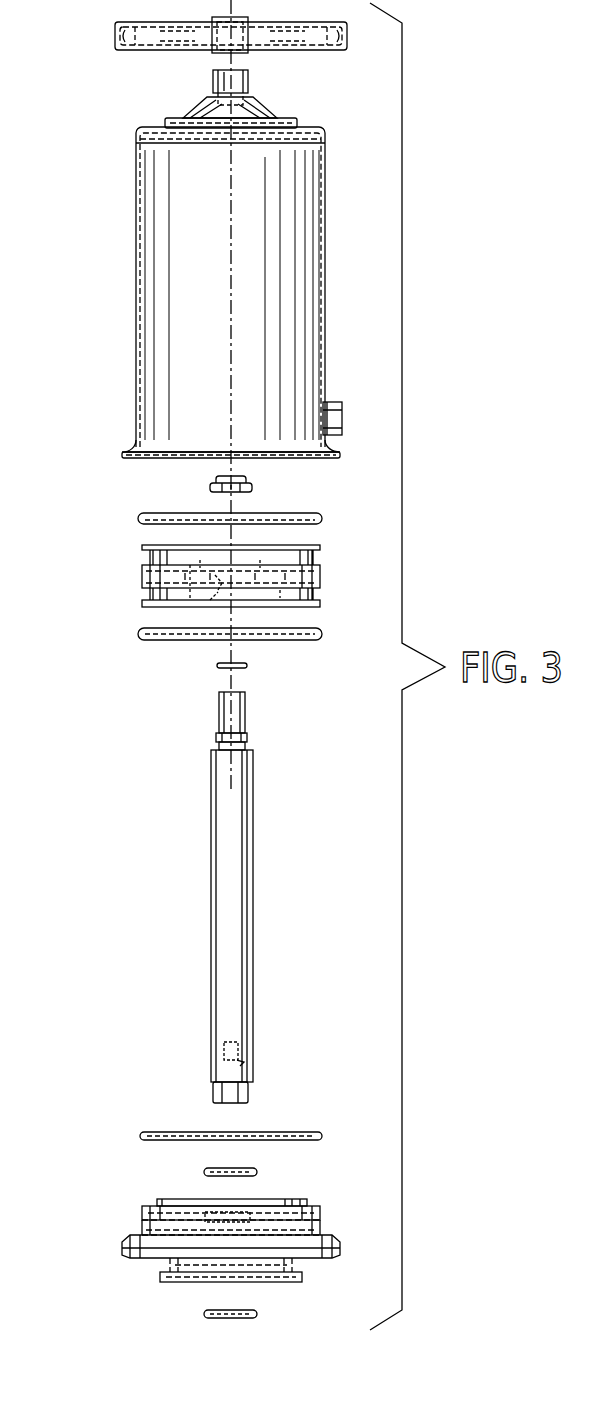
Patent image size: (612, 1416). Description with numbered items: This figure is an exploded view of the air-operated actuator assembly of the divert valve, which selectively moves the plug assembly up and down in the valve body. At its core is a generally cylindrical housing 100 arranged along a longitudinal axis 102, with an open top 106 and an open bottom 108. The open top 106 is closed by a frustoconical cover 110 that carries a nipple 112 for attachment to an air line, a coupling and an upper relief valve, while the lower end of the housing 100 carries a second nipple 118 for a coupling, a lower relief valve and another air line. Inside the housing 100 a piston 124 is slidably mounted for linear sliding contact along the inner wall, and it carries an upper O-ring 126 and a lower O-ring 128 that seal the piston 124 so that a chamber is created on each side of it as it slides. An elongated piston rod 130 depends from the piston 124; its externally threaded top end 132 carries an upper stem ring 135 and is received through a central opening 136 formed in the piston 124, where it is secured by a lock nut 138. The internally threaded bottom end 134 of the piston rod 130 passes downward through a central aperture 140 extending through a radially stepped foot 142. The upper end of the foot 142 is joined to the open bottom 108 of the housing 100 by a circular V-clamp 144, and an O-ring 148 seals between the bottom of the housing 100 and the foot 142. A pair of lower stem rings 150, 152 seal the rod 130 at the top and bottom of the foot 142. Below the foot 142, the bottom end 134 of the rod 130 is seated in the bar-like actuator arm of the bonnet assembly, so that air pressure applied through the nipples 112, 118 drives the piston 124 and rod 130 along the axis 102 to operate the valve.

The cylindrical housing 100 is at (325, 298).
The longitudinal axis 102 is at (210, 298).
The open top 106 is at (300, 147).
The open bottom 108 is at (310, 457).
The frustoconical cover 110 is at (292, 120).
The nipple 112 is at (233, 85).
The nipple 118 is at (335, 402).
The piston 124 is at (320, 578).
The upper O-ring 126 is at (322, 517).
The lower O-ring 128 is at (322, 632).
The piston rod 130 is at (240, 878).
The externally threaded top end 132 is at (232, 717).
The internally threaded bottom end 134 is at (248, 1095).
The upper stem ring 135 is at (248, 667).
The central opening 136 is at (215, 598).
The lock nut 138 is at (250, 487).
The central aperture 140 is at (244, 1062).
The radially stepped foot 142 is at (330, 1230).
The circular V-clamp 144 is at (284, 22).
The O-ring 148 is at (322, 1136).
The lower stem ring 150 is at (258, 1172).
The lower stem ring 152 is at (258, 1313).